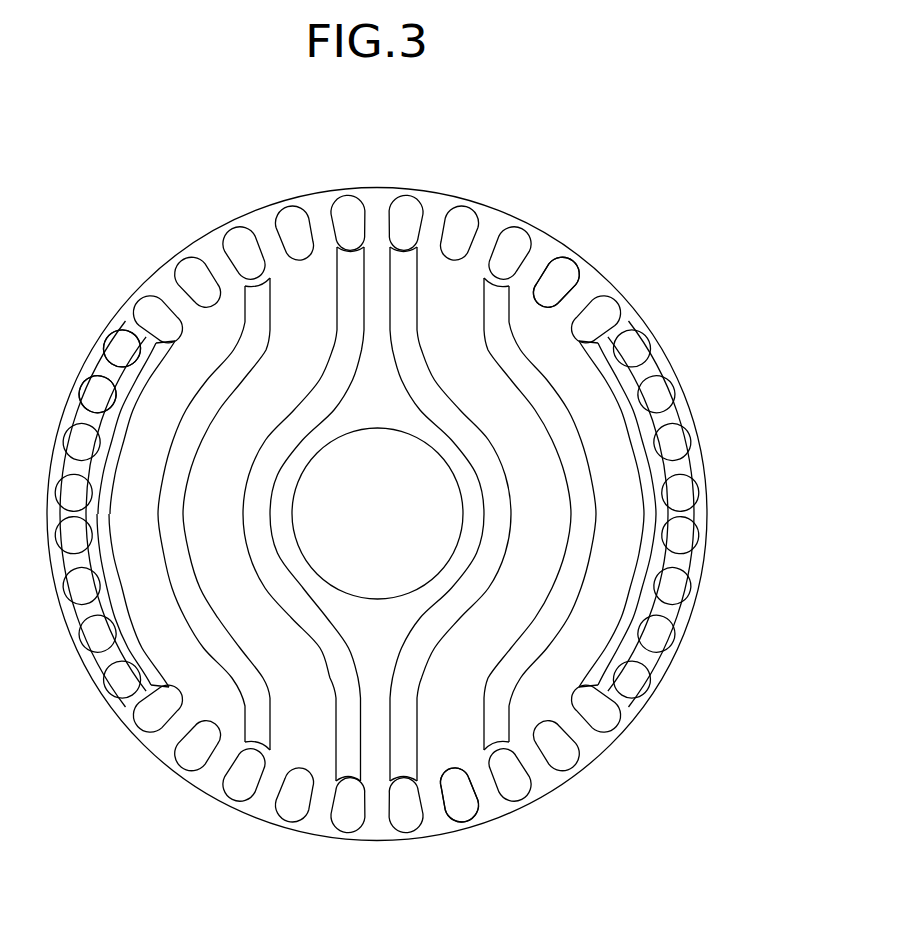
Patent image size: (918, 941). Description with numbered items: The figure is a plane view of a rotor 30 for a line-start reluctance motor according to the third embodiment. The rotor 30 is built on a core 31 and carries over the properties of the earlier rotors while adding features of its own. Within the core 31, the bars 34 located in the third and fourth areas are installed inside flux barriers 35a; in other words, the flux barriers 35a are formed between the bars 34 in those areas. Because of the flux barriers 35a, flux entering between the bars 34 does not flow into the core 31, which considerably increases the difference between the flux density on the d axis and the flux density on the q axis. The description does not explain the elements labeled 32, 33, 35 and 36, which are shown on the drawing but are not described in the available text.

The rotor 30 is at (456, 172).
The core 31 is at (320, 208).
The shaft hole 32 is at (368, 599).
The slot 33 is at (520, 242).
The bars 34 is at (527, 244).
The flux barrier 35 is at (503, 678).
The flux barriers 35a is at (108, 370).
The rib 36 is at (448, 713).